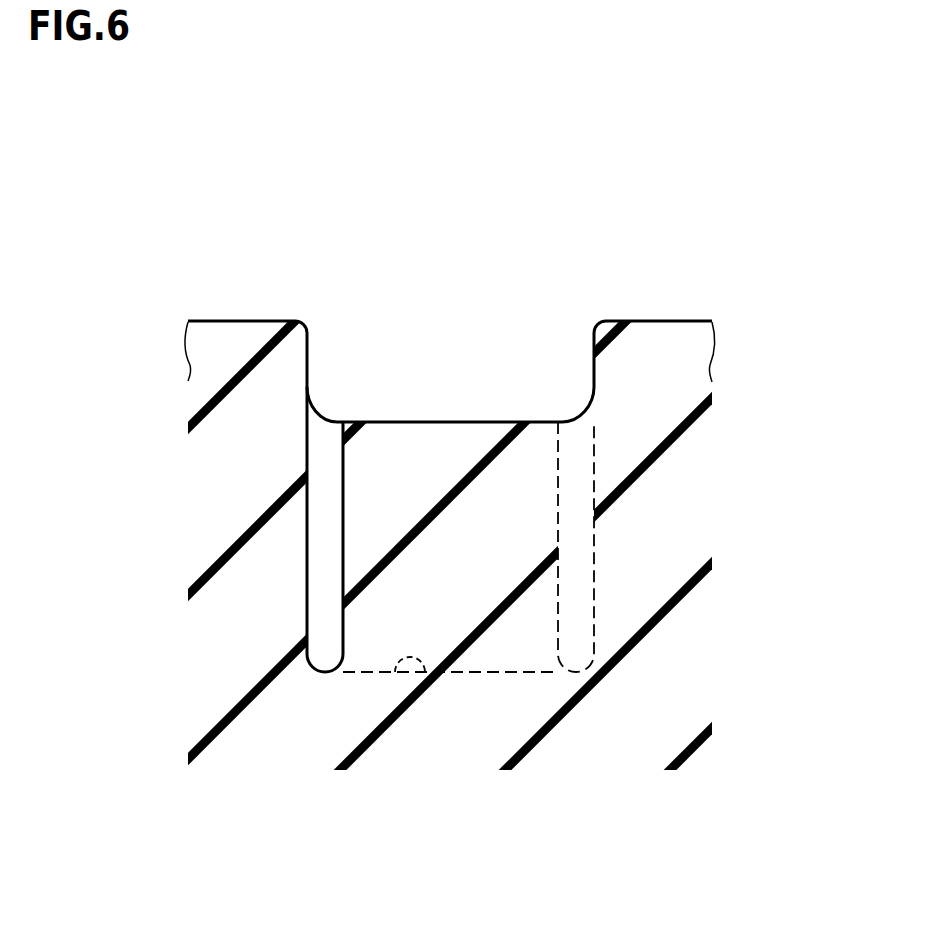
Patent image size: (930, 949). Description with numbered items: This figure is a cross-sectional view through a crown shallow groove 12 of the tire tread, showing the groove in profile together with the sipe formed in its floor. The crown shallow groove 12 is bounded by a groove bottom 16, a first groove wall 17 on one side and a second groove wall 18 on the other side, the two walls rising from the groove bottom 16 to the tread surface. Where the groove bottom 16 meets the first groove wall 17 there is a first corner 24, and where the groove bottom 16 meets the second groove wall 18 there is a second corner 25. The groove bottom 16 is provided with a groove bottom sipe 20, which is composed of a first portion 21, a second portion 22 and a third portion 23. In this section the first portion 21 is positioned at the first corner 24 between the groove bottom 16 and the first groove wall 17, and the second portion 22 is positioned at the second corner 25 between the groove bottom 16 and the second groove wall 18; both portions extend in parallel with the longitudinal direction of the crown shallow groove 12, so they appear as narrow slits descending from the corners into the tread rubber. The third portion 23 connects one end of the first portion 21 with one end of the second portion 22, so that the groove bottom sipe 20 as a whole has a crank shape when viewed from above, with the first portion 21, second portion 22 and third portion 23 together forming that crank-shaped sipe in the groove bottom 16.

The crown shallow groove 12 is at (342, 200).
The groove bottom 16 is at (457, 422).
The first groove wall 17 is at (310, 343).
The second groove wall 18 is at (593, 348).
The groove bottom sipe 20 is at (277, 862).
The first portion 21 is at (307, 597).
The second portion 22 is at (558, 590).
The third portion 23 is at (425, 672).
The first corner 24 is at (334, 417).
The second corner 25 is at (584, 410).